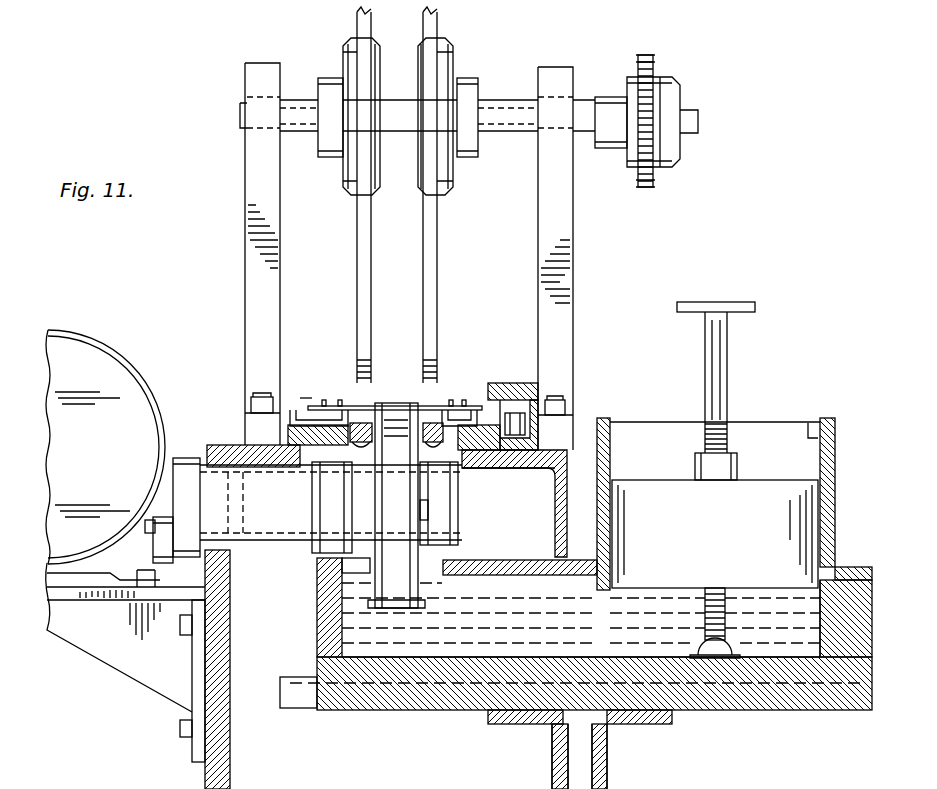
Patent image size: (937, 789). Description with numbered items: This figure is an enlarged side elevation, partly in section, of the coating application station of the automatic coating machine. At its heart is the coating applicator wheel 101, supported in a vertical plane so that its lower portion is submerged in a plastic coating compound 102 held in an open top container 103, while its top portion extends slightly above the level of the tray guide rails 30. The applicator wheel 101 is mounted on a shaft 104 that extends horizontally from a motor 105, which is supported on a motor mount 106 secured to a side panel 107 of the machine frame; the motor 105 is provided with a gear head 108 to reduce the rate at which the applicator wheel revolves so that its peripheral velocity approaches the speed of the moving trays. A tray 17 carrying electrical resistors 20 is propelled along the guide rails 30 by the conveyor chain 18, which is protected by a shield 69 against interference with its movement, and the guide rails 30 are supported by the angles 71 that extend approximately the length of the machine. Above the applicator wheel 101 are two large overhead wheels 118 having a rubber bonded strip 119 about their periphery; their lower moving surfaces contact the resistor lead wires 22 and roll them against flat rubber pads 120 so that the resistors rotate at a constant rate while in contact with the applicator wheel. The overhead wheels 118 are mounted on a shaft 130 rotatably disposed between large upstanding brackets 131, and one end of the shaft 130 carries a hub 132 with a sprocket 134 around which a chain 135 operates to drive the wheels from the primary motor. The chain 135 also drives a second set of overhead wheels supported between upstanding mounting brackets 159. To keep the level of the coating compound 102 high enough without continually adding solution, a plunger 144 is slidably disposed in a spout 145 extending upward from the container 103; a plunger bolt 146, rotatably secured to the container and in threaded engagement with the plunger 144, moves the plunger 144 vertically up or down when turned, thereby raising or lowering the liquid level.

The tray 17 is at (237, 367).
The conveyor chain 18 is at (545, 392).
The electrical resistors 20 is at (405, 375).
The resistor lead wires 22 is at (480, 412).
The tray guide rails 30 is at (298, 448).
The shield 69 is at (515, 383).
The angles 71 is at (243, 448).
The coating applicator wheel 101 is at (400, 556).
The plastic coating compound 102 is at (322, 622).
The open top container 103 is at (345, 715).
The shaft 104 is at (428, 506).
The motor 105 is at (128, 462).
The motor mount 106 is at (127, 668).
The side panel 107 is at (213, 737).
The gear head 108 is at (268, 548).
The overhead wheels 118 is at (358, 262).
The rubber bonded strip 119 is at (358, 407).
The flat rubber pads 120 is at (352, 412).
The shaft 130 is at (505, 107).
The upstanding brackets 131 is at (250, 277).
The hub 132 is at (668, 98).
The sprocket 134 is at (648, 148).
The chain 135 is at (660, 58).
The plunger 144 is at (735, 549).
The spout 145 is at (808, 420).
The plunger bolt 146 is at (718, 388).
The upstanding mounting brackets 159 is at (95, 788).